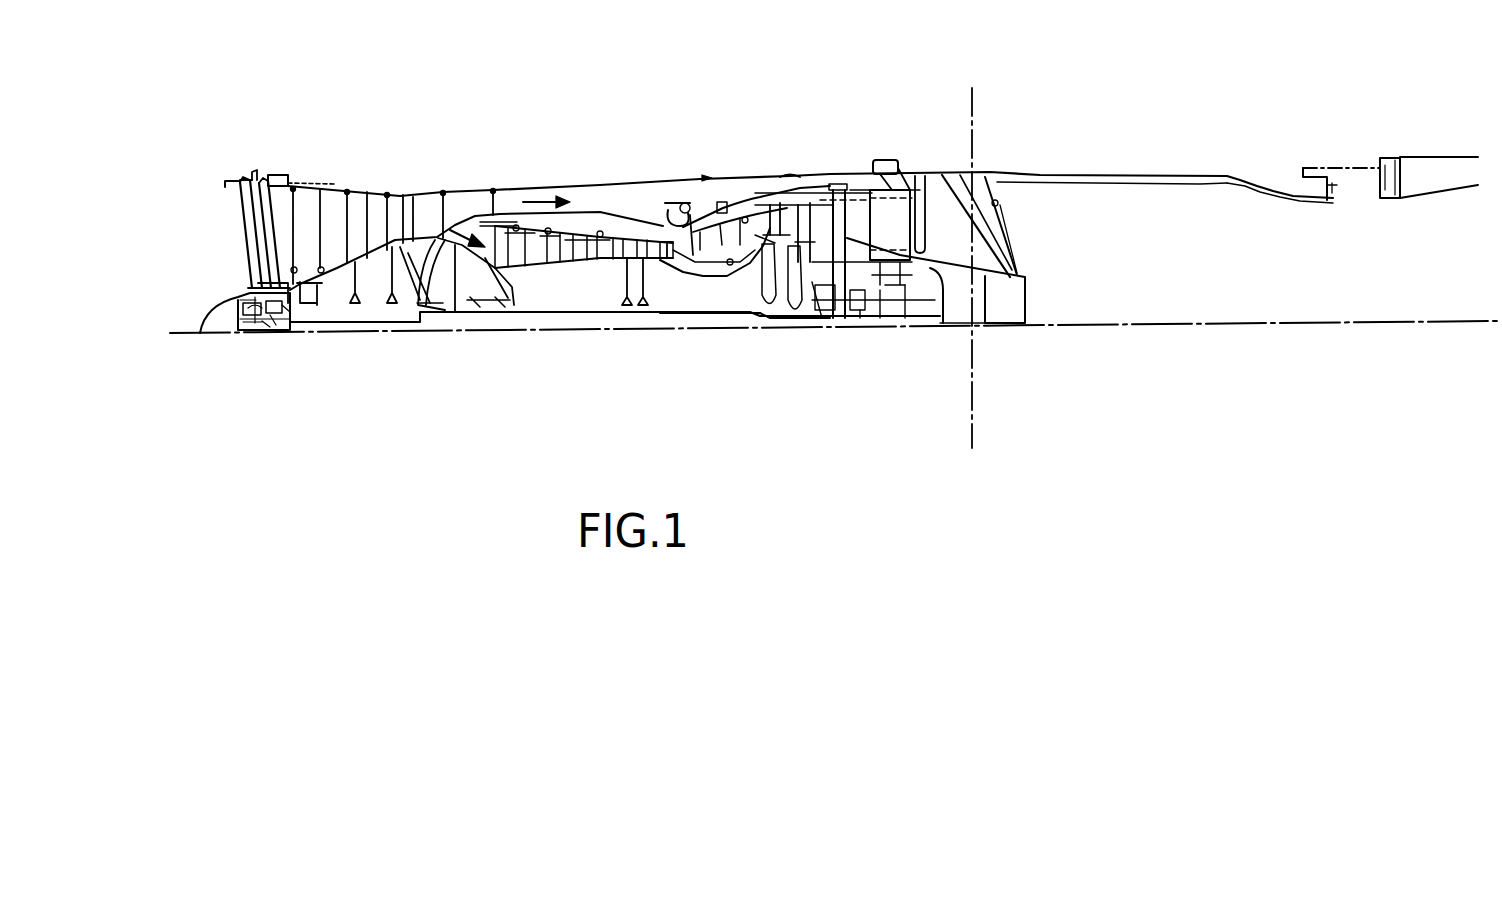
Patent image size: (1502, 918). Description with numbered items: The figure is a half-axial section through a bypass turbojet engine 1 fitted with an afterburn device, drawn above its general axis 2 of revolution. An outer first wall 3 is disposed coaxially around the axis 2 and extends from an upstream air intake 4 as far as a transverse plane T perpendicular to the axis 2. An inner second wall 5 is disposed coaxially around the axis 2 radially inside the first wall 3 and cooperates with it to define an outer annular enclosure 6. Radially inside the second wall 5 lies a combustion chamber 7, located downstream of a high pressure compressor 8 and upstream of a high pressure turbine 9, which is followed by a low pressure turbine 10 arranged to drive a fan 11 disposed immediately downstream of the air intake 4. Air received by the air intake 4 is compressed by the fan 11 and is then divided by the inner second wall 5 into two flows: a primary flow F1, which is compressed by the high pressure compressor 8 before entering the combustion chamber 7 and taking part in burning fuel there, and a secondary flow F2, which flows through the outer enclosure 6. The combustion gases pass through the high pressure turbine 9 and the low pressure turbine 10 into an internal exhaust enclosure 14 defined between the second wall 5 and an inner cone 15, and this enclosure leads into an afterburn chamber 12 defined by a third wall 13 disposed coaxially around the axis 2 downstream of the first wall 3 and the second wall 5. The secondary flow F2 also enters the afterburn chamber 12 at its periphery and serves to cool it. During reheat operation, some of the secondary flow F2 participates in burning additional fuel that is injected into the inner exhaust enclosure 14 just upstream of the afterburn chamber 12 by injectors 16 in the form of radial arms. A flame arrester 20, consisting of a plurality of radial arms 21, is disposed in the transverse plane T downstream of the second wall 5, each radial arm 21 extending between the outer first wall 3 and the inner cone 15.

The turbojet engine 1 is at (464, 86).
The axis 2 is at (1212, 325).
The outer first wall 3 is at (758, 175).
The air intake 4 is at (228, 209).
The inner second wall 5 is at (715, 212).
The outer annular enclosure 6 is at (632, 210).
The combustion chamber 7 is at (728, 233).
The high pressure compressor 8 is at (583, 237).
The high pressure turbine 9 is at (787, 250).
The low pressure turbine 10 is at (840, 285).
The fan 11 is at (300, 288).
The afterburn chamber 12 is at (1220, 227).
The third wall 13 is at (1143, 178).
The internal exhaust enclosure 14 is at (960, 205).
The inner cone 15 is at (986, 278).
The injectors 16 is at (955, 237).
The flame arrester 20 is at (1027, 237).
The radial arms 21 is at (997, 182).
The primary flow F1 is at (475, 210).
The secondary flow F2 is at (530, 189).
The transverse plane T is at (960, 422).